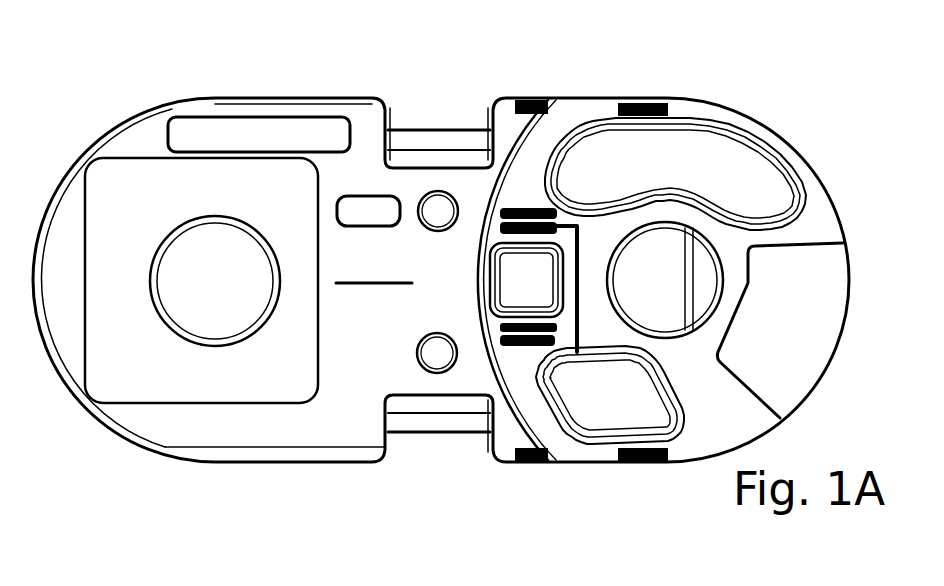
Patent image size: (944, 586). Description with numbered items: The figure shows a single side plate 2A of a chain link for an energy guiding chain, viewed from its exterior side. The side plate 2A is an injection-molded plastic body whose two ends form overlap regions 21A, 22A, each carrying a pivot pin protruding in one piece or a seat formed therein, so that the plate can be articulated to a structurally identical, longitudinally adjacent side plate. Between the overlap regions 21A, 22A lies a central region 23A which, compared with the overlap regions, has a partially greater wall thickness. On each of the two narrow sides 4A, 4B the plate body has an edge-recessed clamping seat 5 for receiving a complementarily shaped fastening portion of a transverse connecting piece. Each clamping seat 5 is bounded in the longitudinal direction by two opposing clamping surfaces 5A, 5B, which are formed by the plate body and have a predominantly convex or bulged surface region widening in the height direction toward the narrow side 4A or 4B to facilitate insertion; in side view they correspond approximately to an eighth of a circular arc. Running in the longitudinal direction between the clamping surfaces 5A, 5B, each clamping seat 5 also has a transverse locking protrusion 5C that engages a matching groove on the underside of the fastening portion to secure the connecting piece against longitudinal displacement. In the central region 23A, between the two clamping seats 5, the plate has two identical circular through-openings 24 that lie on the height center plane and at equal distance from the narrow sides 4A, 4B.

The side plate 2A is at (706, 66).
The narrow side 4A is at (266, 90).
The narrow side 4B is at (240, 471).
The clamping seat 5 is at (440, 116).
The clamping surface 5A is at (391, 95).
The clamping surface 5B is at (490, 95).
The transverse locking protrusion 5C is at (437, 422).
The through-opening 24 is at (438, 212).
The overlap region 21A is at (350, 536).
The overlap region 22A is at (843, 536).
The central region 23A is at (515, 536).